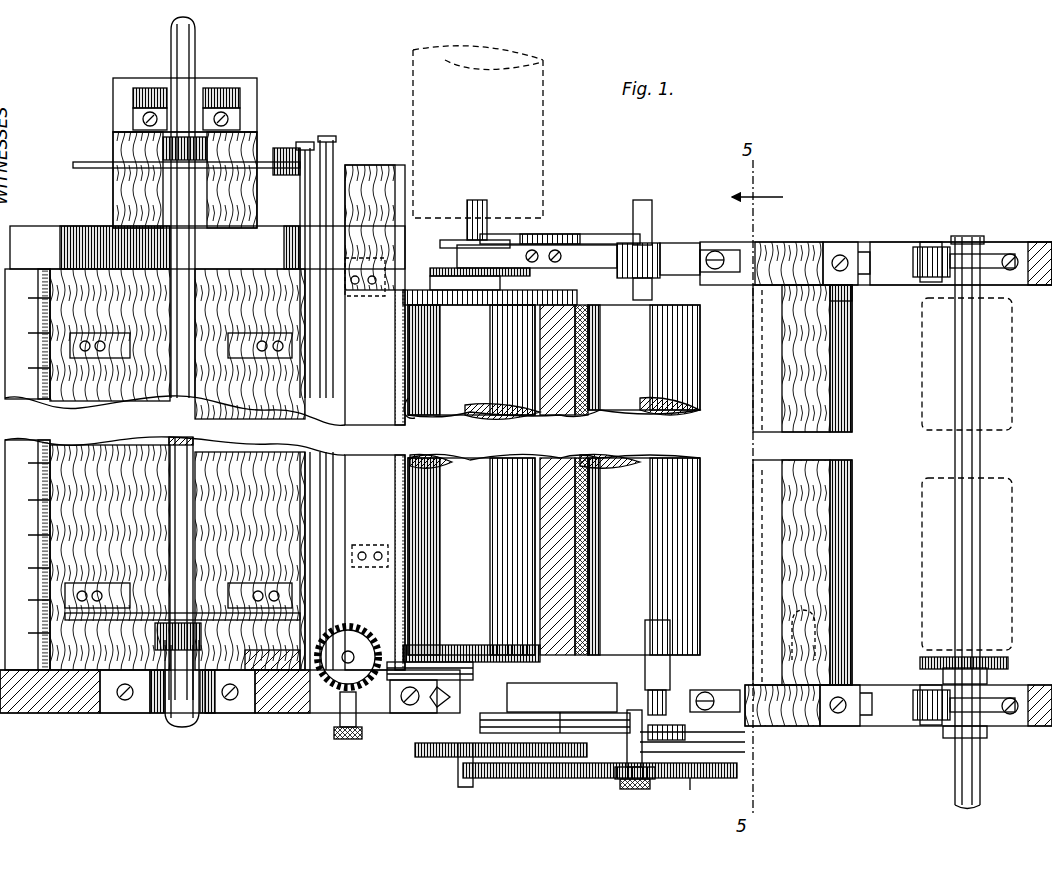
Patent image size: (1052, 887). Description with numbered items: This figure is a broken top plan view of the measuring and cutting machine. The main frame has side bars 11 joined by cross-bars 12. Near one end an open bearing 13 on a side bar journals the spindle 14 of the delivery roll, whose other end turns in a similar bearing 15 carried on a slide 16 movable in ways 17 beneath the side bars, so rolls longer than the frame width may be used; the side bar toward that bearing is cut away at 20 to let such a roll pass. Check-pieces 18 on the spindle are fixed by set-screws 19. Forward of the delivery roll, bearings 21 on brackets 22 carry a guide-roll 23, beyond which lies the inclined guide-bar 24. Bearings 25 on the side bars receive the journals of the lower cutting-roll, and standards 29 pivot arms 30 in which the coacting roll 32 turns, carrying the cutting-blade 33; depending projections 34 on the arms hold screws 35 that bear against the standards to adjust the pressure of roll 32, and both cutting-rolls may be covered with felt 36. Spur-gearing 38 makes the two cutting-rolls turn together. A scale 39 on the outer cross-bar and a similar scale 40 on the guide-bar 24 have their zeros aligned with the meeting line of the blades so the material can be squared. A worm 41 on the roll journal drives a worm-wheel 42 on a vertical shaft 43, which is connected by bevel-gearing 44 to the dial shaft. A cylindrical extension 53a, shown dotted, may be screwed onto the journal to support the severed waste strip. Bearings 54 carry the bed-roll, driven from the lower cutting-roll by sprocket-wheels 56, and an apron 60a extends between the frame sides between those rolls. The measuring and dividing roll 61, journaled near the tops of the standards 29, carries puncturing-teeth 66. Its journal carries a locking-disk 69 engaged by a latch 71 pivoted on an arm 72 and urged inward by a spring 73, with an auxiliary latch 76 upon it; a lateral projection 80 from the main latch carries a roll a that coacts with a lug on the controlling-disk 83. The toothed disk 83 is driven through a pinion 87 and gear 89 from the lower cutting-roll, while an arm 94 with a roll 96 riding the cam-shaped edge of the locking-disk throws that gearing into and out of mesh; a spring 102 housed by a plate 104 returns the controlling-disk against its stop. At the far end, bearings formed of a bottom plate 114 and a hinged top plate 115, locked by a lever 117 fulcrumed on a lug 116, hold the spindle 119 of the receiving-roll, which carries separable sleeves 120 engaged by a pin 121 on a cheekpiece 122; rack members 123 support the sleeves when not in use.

The side bars 11 is at (772, 246).
The cross-bars 12 is at (451, 485).
The open bearing 13 is at (160, 722).
The spindle 14 is at (192, 403).
The bearing 15 is at (208, 92).
The slide 16 is at (177, 344).
The ways 17 is at (115, 358).
The check-pieces 18 is at (135, 610).
The set-screws 19 is at (180, 148).
The cut-away portion 20 is at (207, 247).
The bearings 21 is at (330, 150).
The brackets 22 is at (297, 212).
The guide-roll 23 is at (300, 425).
The guide-bar 24 is at (375, 417).
The bearings 25 is at (430, 250).
The standards 29 is at (652, 250).
The arms 30 is at (537, 478).
The coacting roll 32 is at (471, 480).
The cutting-blade 33 is at (462, 305).
The depending projections 34 is at (685, 255).
The screws 35 is at (720, 262).
The felt covering 36 is at (480, 457).
The spur-gearing 38 is at (462, 645).
The scale 39 is at (48, 440).
The scale 40 is at (412, 416).
The worm 41 is at (425, 660).
The worm-wheel 42 is at (282, 691).
The vertical shaft 43 is at (352, 655).
The bevel-gearing 44 is at (340, 712).
The cylindrical extension 53a is at (545, 160).
The bearing 54 is at (592, 244).
The sprocket-wheels 56 is at (673, 731).
The apron 60a is at (563, 480).
The measuring and dividing roll 61 is at (554, 480).
The puncturing-teeth 66 is at (590, 390).
The locking disk 69 is at (700, 722).
The latch 71 is at (574, 710).
The arm 72 is at (392, 730).
The spring 73 is at (555, 710).
The auxiliary latch 76 is at (662, 702).
The lateral projection 80 is at (602, 803).
The controlling disk 83 is at (690, 780).
The pinion 87 is at (503, 760).
The gear 89 is at (437, 760).
The arm 94 is at (720, 752).
The roll 96 is at (705, 738).
The spring 102 is at (578, 780).
The plate 104 is at (690, 760).
The bottom plate 114 is at (842, 244).
The top plate 115 is at (896, 246).
The lug 116 is at (922, 277).
The lever 117 is at (1002, 254).
The spindle 119 is at (965, 474).
The sleeves 120 is at (852, 460).
The pin 121 is at (935, 672).
The cheekpiece 122 is at (1010, 668).
The rack members 123 is at (852, 301).
The roll a is at (632, 780).